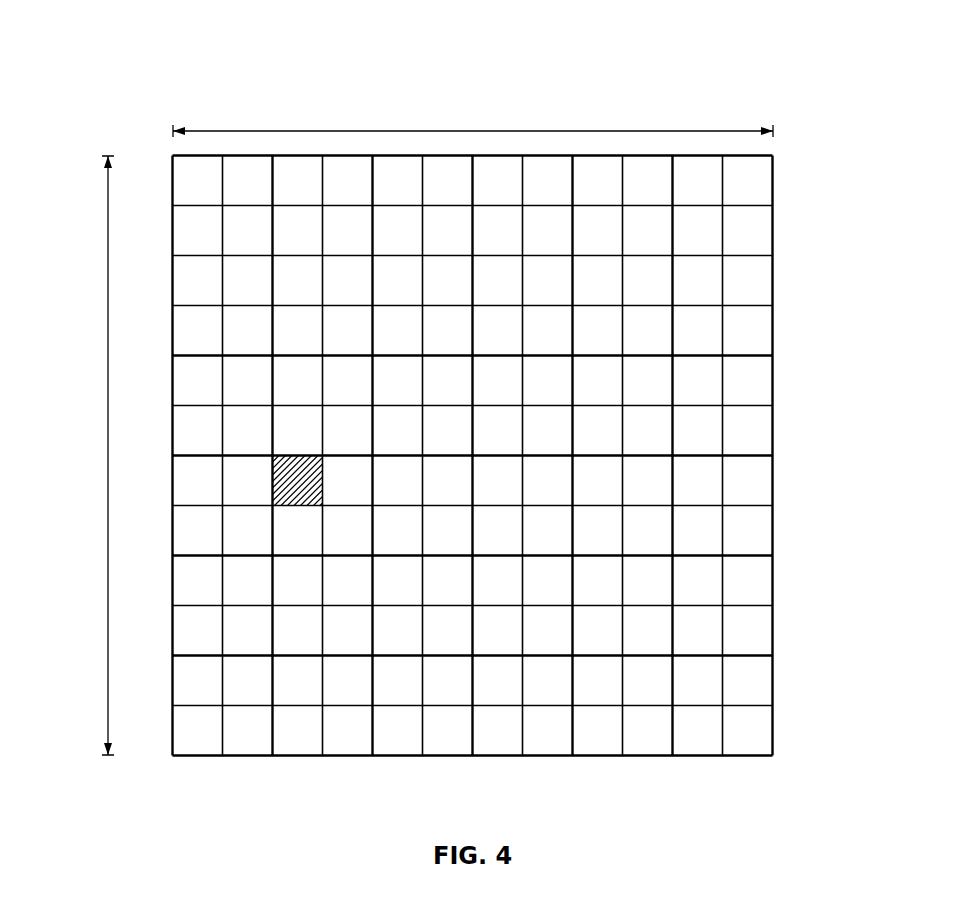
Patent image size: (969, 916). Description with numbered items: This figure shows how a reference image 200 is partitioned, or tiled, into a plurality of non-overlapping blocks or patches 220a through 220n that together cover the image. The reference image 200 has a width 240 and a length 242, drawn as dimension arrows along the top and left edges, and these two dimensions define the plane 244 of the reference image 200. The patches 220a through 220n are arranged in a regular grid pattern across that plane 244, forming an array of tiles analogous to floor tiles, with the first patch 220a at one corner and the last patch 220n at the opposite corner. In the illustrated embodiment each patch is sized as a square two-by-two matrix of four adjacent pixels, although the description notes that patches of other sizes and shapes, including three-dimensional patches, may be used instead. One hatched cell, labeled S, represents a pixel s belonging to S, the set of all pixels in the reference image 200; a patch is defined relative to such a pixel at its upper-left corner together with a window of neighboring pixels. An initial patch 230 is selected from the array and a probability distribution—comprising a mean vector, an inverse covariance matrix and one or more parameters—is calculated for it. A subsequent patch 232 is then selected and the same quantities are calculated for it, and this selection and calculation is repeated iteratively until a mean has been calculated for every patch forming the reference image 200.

The reference image 200 is at (196, 64).
The width 240 is at (473, 131).
The length 242 is at (107, 471).
The patch 220n is at (748, 183).
The patch 220a is at (196, 732).
The plane 244 is at (745, 737).
The set of all pixels S is at (292, 481).
The patch 230 is at (297, 535).
The patch 232 is at (442, 482).